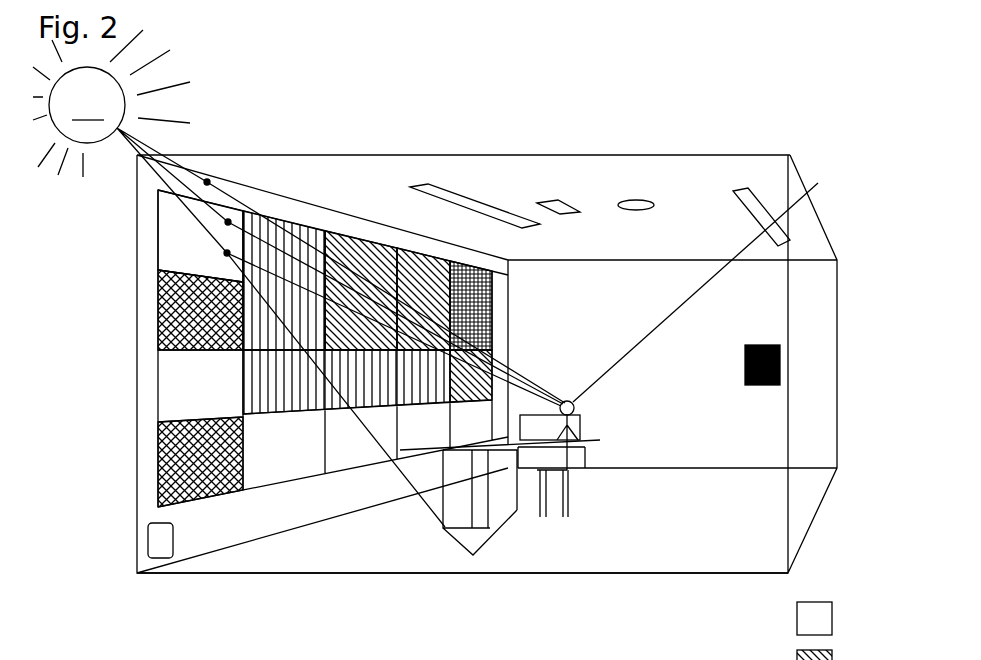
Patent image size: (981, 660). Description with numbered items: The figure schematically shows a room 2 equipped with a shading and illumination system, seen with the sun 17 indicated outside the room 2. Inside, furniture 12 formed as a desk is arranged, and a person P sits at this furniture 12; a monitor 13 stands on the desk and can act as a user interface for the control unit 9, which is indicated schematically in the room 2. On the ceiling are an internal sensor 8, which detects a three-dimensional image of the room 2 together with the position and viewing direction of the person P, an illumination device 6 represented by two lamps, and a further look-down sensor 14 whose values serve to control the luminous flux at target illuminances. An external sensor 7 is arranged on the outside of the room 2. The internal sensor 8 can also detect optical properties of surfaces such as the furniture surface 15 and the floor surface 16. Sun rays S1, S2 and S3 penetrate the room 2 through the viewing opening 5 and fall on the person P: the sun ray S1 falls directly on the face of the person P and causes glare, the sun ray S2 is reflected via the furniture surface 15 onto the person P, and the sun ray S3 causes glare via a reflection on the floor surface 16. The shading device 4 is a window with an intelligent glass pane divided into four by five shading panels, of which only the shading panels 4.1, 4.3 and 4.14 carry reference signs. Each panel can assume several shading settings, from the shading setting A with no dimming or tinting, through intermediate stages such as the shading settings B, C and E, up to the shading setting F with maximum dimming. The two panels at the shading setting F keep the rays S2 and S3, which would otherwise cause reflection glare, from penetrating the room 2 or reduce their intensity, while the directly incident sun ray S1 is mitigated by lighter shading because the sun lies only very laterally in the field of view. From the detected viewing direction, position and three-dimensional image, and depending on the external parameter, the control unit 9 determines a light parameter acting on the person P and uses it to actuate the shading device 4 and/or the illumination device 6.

The room 2 is at (838, 96).
The shading device 4 is at (285, 257).
The shading panel 4.1 is at (235, 213).
The shading panel 4.3 is at (331, 199).
The shading panel 4.14 is at (410, 250).
The viewing opening 5 is at (302, 225).
The illumination device 6 is at (460, 197).
The external sensor 7 is at (157, 545).
The internal sensor 8 is at (643, 199).
The control unit 9 is at (780, 350).
The furniture 12 is at (582, 445).
The monitor 13 is at (570, 475).
The sensor 14 is at (557, 205).
The furniture surface 15 is at (447, 530).
The floor surface 16 is at (552, 553).
The sun 17 is at (130, 141).
The sun ray S1 is at (207, 182).
The sun ray S2 is at (228, 222).
The sun ray S3 is at (227, 253).
The shading setting B is at (370, 238).
The shading setting C is at (280, 383).
The shading setting E is at (455, 263).
The shading setting F is at (208, 453).
The person P is at (743, 273).
The shading setting A is at (826, 620).